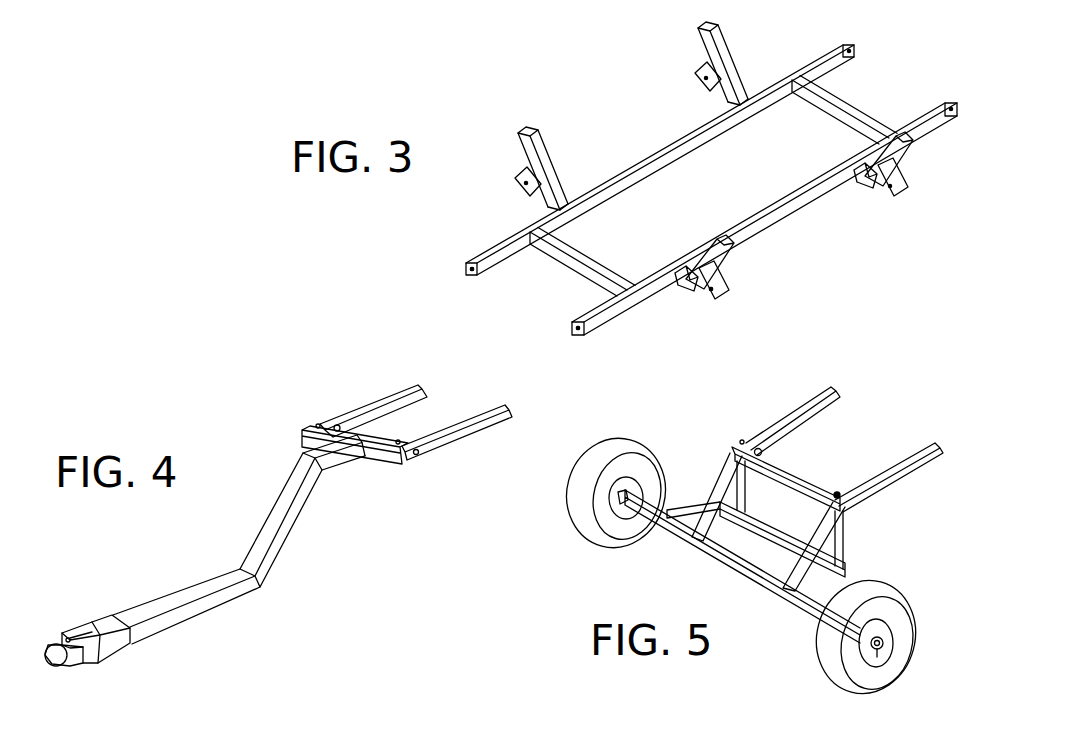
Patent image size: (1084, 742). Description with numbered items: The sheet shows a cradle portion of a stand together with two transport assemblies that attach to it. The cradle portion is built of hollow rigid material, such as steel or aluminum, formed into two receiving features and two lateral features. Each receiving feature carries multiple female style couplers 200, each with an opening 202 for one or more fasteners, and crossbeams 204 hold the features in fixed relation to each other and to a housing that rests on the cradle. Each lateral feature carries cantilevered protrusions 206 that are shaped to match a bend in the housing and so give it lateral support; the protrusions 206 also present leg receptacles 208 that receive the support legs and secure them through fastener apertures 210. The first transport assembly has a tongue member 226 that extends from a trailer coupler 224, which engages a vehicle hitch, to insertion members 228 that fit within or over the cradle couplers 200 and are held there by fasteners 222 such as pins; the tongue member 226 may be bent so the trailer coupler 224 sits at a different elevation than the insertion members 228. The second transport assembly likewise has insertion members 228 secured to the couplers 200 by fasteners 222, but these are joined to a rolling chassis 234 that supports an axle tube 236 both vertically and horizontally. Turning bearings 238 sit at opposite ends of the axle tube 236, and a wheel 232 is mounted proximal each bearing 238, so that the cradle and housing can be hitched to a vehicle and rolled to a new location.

In FIG. 3, the female style coupler 200 is at (926, 133).
In FIG. 3, the opening 202 is at (486, 270).
In FIG. 3, the crossbeam 204 is at (830, 108).
In FIG. 3, the cantilevered protrusion 206 is at (730, 78).
In FIG. 3, the leg receptacle 208 is at (700, 86).
In FIG. 3, the fastener aperture 210 is at (712, 303).
In FIG. 4, the fastener 222 is at (423, 465).
In FIG. 5, the fastener 222 is at (863, 511).
In FIG. 4, the trailer coupler 224 is at (86, 677).
In FIG. 4, the tongue member 226 is at (297, 517).
In FIG. 4, the insertion member 228 is at (354, 410).
In FIG. 5, the insertion member 228 is at (802, 412).
In FIG. 5, the wheel 232 is at (575, 527).
In FIG. 5, the rolling chassis 234 is at (799, 466).
In FIG. 5, the axle tube 236 is at (728, 566).
In FIG. 5, the turning bearing 238 is at (624, 520).